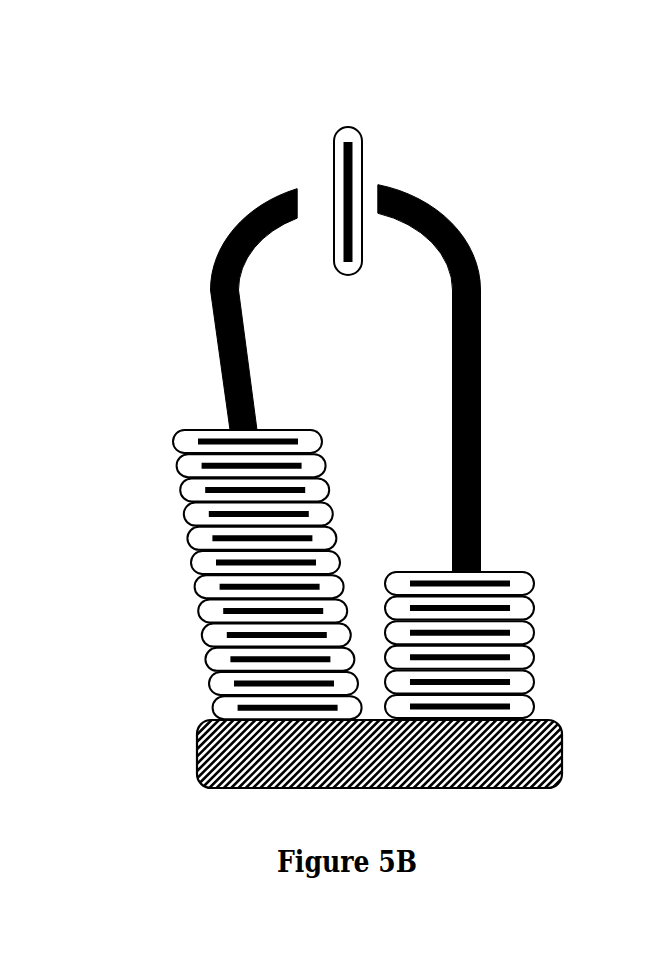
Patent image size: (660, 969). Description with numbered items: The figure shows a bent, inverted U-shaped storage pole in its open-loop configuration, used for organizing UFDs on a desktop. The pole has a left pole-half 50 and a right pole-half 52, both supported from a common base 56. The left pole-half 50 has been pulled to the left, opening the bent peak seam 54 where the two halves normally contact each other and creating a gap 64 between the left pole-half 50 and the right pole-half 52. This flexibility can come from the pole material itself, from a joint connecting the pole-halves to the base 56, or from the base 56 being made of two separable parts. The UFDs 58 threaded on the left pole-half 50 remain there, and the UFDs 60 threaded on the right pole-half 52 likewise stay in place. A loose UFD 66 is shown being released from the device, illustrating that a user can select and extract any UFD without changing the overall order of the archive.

The left pole-half 50 is at (243, 217).
The right pole-half 52 is at (480, 338).
The bent peak seam 54 is at (290, 187).
The base 56 is at (562, 730).
The UFDs 58 is at (187, 430).
The UFDs 60 is at (510, 571).
The gap 64 is at (320, 197).
The loose UFD 66 is at (350, 126).